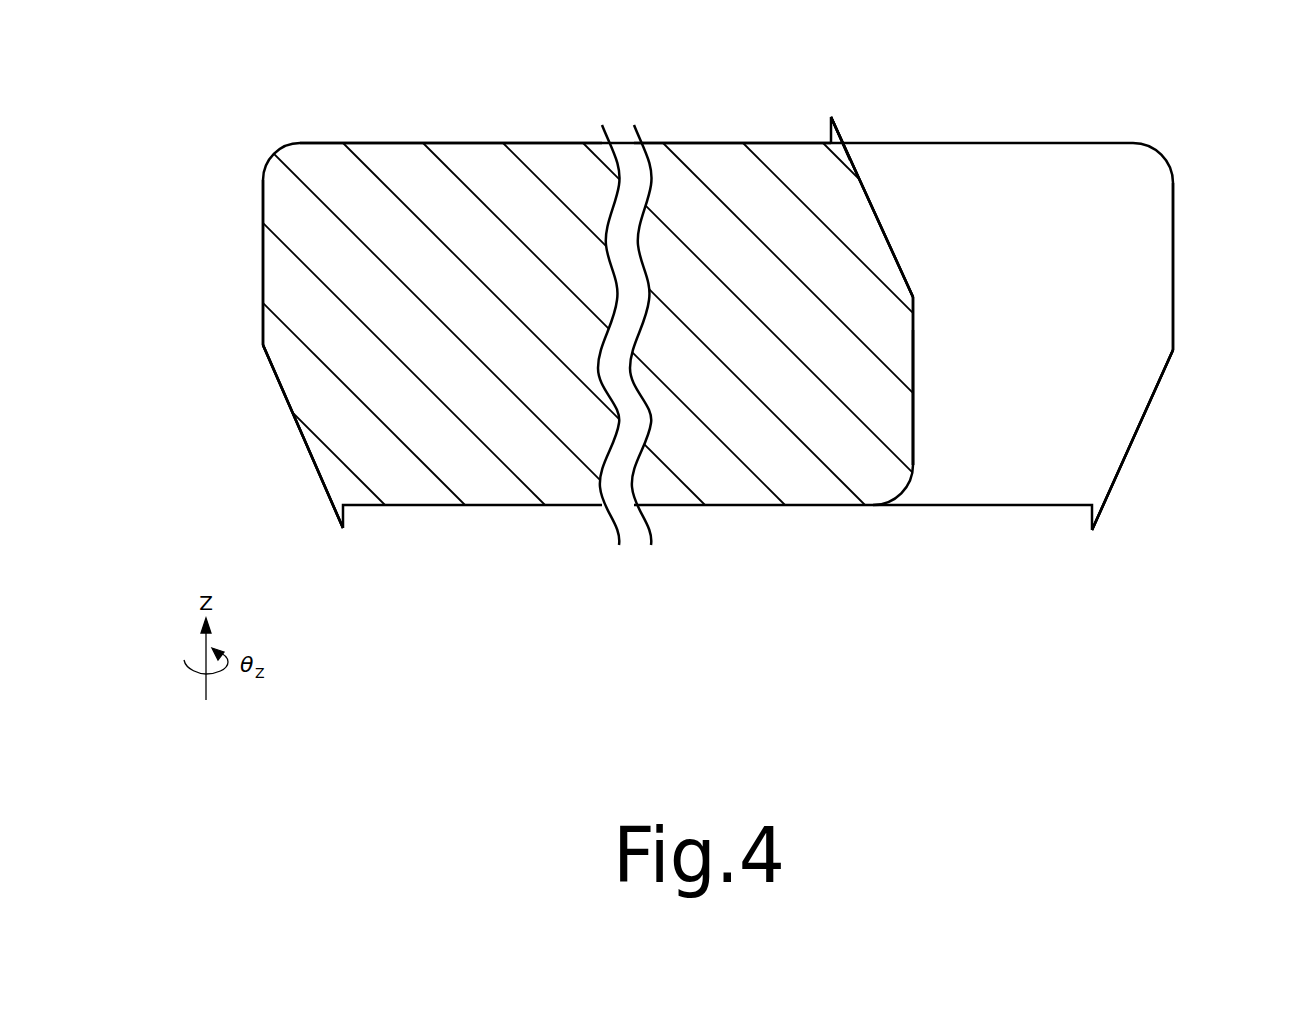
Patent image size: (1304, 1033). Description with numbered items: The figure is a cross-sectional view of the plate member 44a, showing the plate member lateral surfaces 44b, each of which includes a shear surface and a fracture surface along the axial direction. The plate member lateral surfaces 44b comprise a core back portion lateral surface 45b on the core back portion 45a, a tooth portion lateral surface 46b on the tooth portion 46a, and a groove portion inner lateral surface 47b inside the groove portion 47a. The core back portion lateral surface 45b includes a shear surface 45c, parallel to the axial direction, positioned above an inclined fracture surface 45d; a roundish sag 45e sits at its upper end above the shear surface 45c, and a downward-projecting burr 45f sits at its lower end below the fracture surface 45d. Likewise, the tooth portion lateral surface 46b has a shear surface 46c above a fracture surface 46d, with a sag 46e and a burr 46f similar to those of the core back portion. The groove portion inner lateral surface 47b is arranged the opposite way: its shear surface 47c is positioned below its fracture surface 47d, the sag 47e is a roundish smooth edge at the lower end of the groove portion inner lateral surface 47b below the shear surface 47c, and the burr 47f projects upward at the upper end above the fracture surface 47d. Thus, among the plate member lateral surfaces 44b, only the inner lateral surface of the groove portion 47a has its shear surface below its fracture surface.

The plate member 44a is at (1068, 143).
The plate member lateral surfaces 44b is at (960, 42).
The core back portion 45a is at (770, 160).
The core back portion lateral surface 45b is at (1265, 530).
The shear surface 45c is at (1173, 307).
The fracture surface 45d is at (1138, 437).
The sag 45e is at (1160, 150).
The burr 45f is at (1097, 513).
The tooth portion 46a is at (440, 160).
The tooth portion lateral surface 46b is at (292, 486).
The shear surface 46c is at (263, 262).
The fracture surface 46d is at (292, 415).
The sag 46e is at (287, 157).
The burr 46f is at (338, 508).
The groove portion 47a is at (913, 437).
The groove portion inner lateral surface 47b is at (885, 100).
The shear surface 47c is at (913, 352).
The fracture surface 47d is at (873, 208).
The sag 47e is at (892, 487).
The burr 47f is at (839, 133).